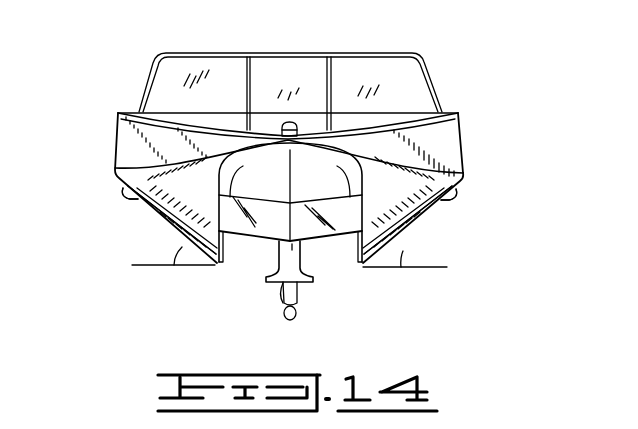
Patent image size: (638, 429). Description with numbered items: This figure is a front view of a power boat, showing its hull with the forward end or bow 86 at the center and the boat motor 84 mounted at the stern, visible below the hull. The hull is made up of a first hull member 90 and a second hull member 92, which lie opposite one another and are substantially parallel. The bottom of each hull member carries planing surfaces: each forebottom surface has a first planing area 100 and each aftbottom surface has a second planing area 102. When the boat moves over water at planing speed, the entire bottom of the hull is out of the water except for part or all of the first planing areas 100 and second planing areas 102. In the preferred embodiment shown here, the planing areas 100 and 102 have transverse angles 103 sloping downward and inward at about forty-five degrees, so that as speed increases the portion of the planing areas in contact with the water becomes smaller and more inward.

The boat motor 84 is at (292, 252).
The bow 86 is at (298, 131).
The first hull member 90 is at (465, 151).
The second hull member 92 is at (114, 148).
The first planing area 100 is at (133, 198).
The second planing area 102 is at (168, 227).
The transverse angle 103 is at (182, 247).